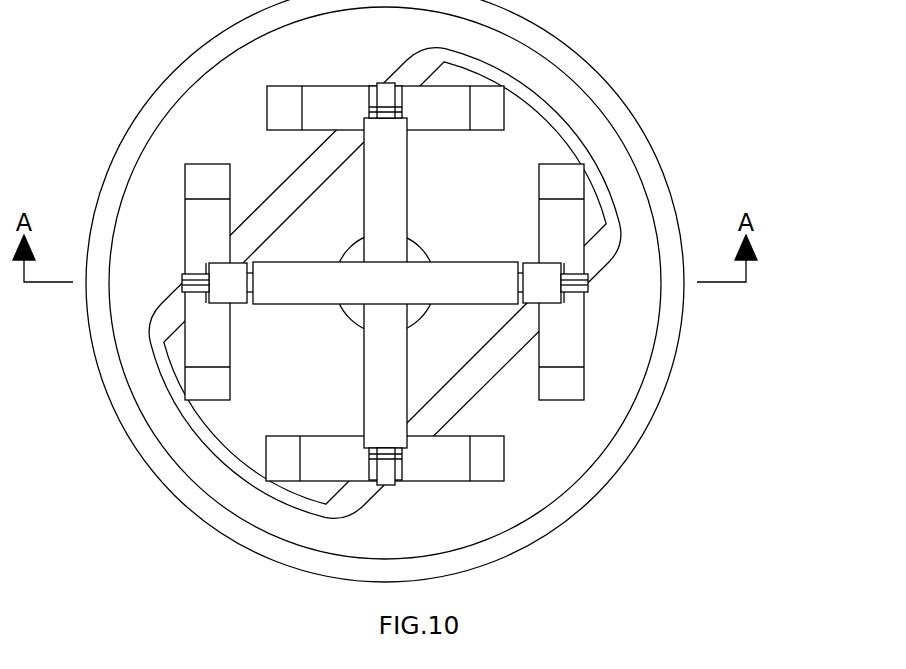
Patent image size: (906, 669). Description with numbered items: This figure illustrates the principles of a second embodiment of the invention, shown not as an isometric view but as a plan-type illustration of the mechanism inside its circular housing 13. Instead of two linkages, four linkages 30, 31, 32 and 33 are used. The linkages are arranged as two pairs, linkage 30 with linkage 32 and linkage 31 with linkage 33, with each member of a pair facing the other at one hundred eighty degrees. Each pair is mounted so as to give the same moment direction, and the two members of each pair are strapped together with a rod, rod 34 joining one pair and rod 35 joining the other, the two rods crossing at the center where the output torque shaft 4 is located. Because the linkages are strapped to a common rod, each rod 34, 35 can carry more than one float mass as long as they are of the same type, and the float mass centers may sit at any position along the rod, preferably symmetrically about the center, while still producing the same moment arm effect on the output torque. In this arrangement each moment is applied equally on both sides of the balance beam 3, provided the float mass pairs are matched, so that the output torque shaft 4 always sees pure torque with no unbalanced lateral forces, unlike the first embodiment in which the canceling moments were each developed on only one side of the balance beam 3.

The balance beam 3 is at (287, 385).
The output torque shaft 4 is at (374, 272).
The housing ring 13 is at (385, 291).
The linkage 30 is at (173, 238).
The linkage 31 is at (353, 74).
The linkage 32 is at (594, 333).
The linkage 33 is at (432, 492).
The rod 34 is at (385, 262).
The rod 35 is at (415, 284).